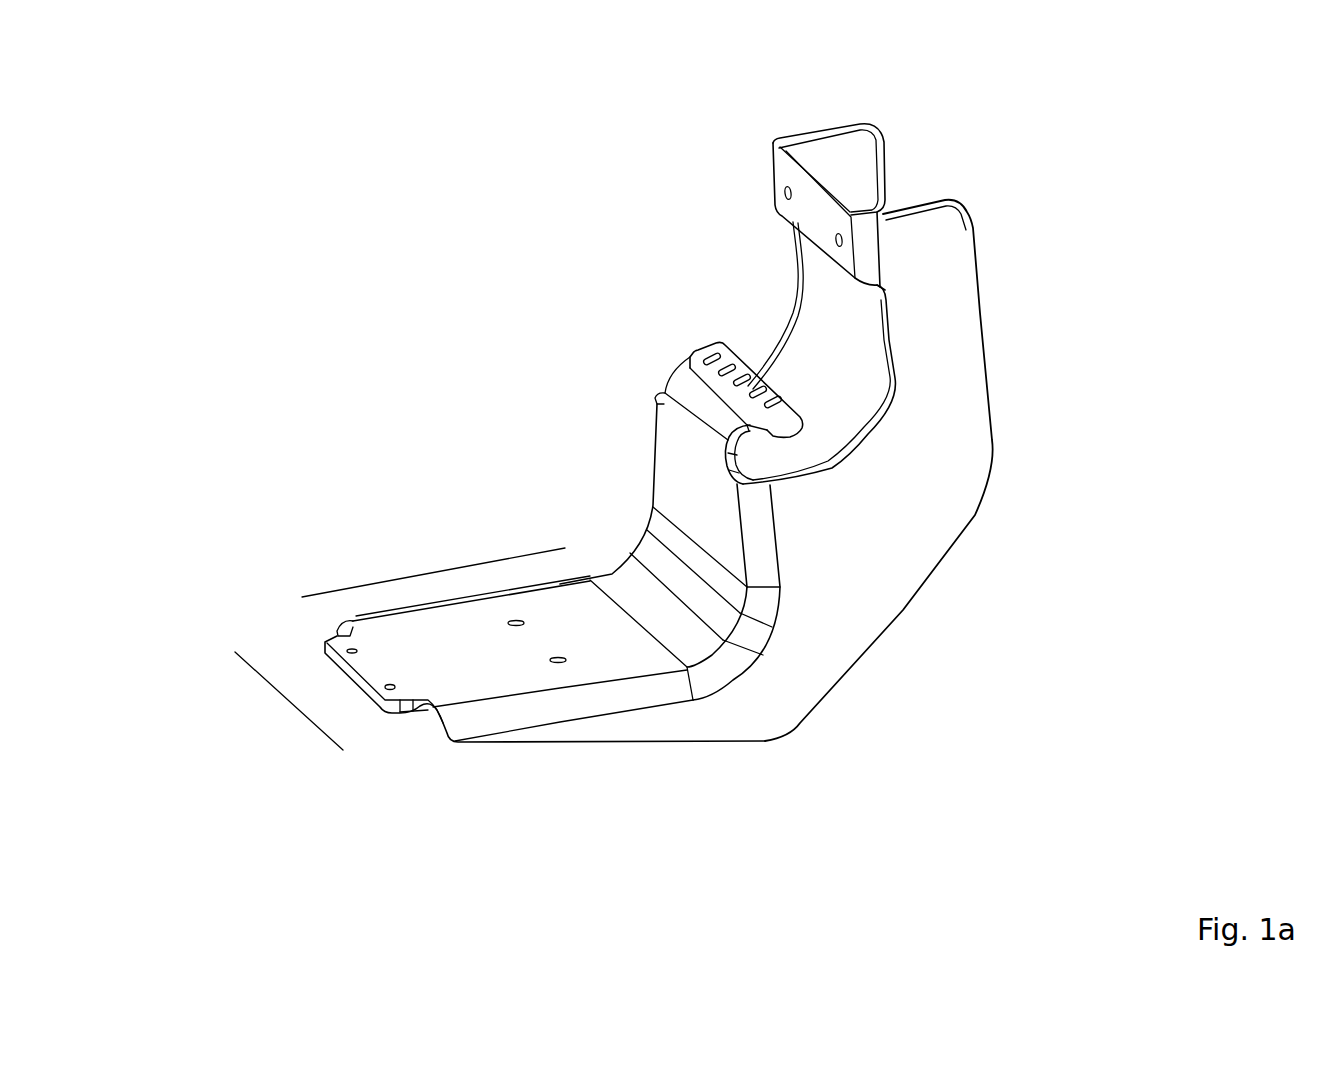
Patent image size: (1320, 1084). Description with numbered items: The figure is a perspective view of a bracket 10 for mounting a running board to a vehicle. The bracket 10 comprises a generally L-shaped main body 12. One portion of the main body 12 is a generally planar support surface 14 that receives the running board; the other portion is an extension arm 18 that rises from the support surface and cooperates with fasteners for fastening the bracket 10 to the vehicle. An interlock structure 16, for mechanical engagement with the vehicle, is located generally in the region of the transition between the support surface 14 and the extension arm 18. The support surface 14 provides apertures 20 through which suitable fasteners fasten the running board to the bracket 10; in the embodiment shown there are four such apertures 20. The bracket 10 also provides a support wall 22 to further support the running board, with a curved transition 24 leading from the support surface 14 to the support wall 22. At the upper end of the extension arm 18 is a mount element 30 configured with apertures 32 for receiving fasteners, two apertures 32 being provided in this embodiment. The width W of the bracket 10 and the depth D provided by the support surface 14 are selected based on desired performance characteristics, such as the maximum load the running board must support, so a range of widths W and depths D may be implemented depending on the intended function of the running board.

The bracket 10 is at (322, 197).
The main body 12 is at (882, 593).
The support surface 14 is at (593, 657).
The interlock structure 16 is at (686, 364).
The extension arm 18 is at (952, 373).
The aperture 20 is at (553, 660).
The support wall 22 is at (676, 503).
The curved transition 24 is at (723, 617).
The mount element 30 is at (783, 162).
The aperture 32 is at (786, 194).
The depth D is at (447, 568).
The width W is at (275, 693).